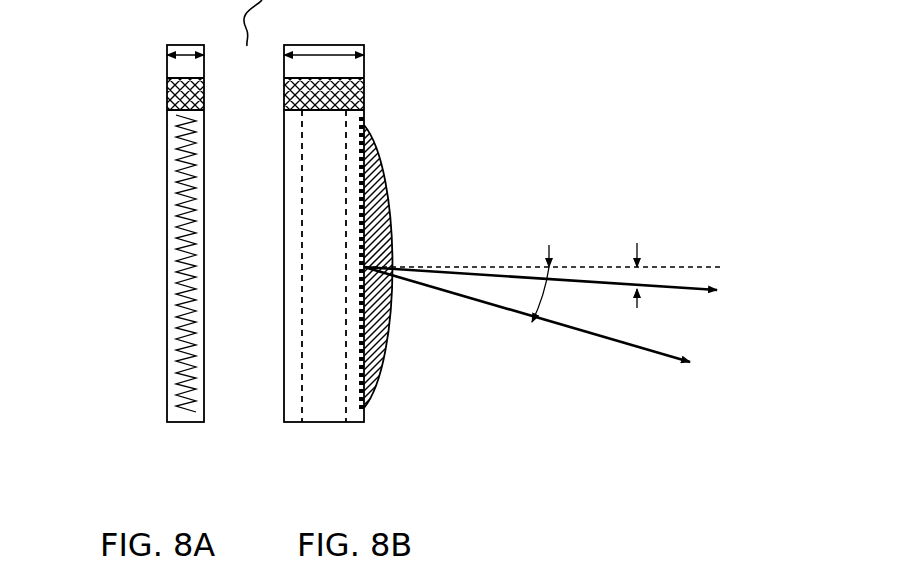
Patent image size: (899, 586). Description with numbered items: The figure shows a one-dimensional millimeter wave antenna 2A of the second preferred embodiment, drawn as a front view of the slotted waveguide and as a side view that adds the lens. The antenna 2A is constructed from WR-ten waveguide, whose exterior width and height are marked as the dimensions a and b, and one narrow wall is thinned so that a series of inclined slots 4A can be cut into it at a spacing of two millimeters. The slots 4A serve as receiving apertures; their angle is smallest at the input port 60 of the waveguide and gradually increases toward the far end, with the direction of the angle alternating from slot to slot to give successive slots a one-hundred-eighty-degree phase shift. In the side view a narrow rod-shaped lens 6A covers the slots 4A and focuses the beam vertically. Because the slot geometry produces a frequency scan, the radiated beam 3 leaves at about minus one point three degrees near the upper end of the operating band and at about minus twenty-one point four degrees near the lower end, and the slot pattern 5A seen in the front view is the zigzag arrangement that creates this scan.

In FIG. 8A, the input port 60 is at (156, 100).
In FIG. 8B, the input port 60 is at (318, 432).
In FIG. 8A, the antenna 2A is at (137, 261).
In FIG. 8A, the meander (zigzag) radiating line 5A is at (186, 328).
In FIG. 8B, the rod-shaped lens 6A is at (378, 152).
In FIG. 8B, the inclined slots 4A is at (365, 382).
In FIG. 8B, the radiated beam 3 is at (447, 198).